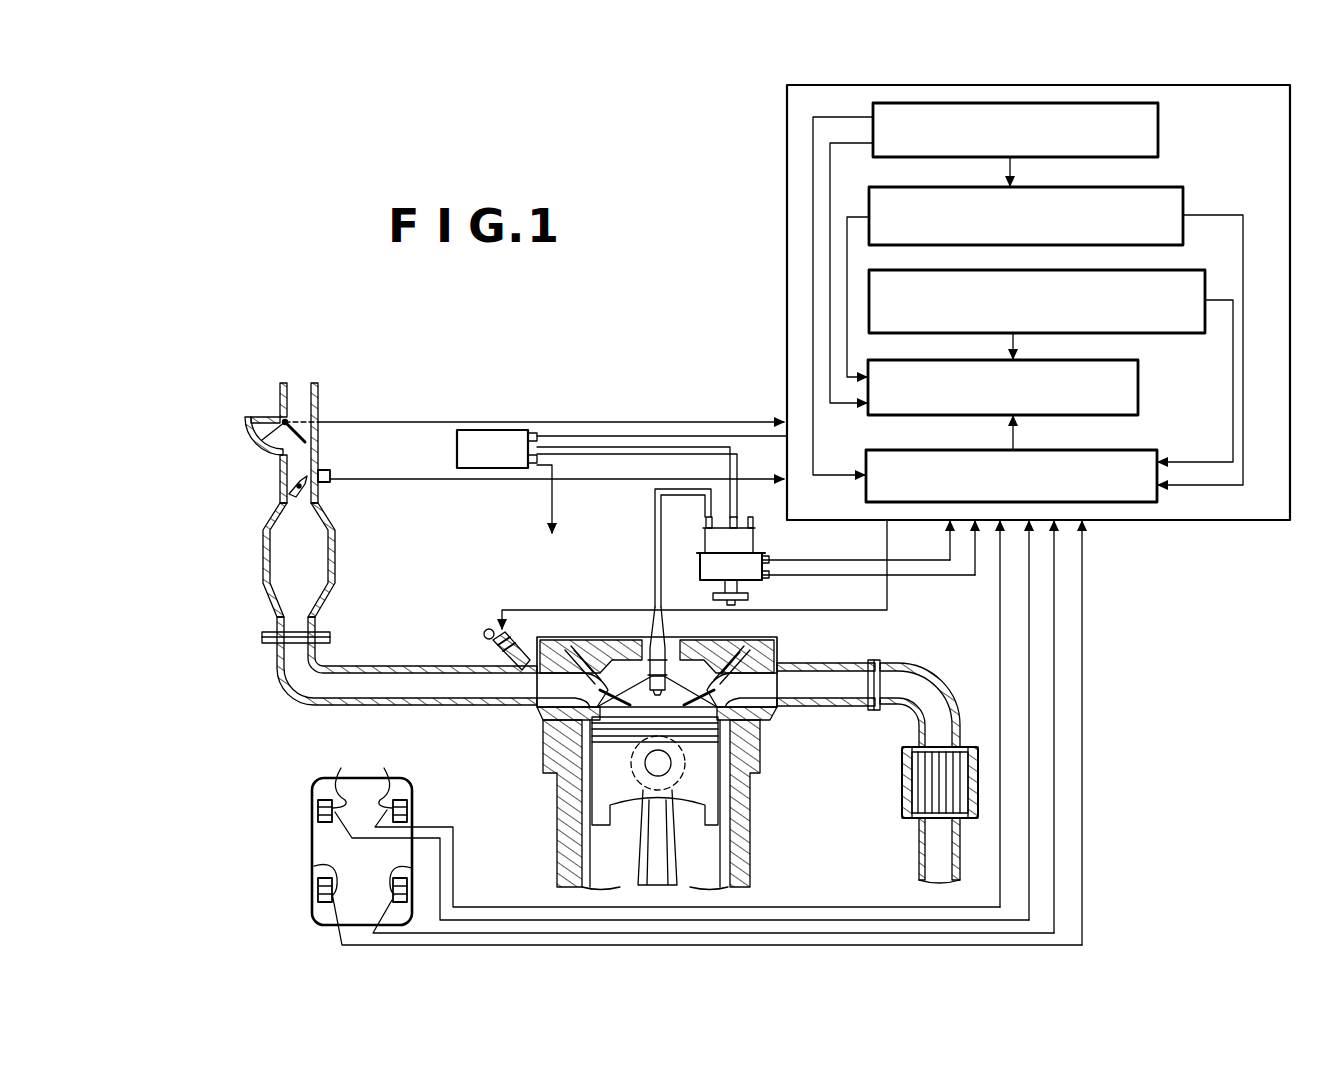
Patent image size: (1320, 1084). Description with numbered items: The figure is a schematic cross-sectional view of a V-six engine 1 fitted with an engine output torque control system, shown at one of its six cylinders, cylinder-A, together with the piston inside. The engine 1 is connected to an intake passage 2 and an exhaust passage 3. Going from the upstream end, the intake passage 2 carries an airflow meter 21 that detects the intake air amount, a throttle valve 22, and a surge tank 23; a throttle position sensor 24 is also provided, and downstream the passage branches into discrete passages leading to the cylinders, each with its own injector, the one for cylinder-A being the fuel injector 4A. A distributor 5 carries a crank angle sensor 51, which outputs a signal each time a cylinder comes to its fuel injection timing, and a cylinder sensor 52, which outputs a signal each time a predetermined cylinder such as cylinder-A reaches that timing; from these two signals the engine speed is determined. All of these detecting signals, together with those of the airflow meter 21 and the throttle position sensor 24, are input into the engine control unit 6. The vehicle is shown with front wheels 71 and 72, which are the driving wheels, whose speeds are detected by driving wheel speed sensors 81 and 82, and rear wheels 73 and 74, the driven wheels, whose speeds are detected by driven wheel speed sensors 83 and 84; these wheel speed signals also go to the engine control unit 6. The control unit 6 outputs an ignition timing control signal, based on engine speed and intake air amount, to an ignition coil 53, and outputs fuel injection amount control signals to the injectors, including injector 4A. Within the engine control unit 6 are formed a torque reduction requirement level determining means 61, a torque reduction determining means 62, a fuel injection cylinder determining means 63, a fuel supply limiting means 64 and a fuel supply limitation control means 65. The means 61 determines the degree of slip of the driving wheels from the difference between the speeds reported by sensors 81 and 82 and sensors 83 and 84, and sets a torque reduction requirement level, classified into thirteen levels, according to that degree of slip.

The V-6 engine 1 is at (641, 763).
The cylinder- A is at (551, 760).
The intake passage 2 is at (265, 511).
The airflow meter 21 is at (283, 420).
The throttle valve 22 is at (292, 487).
The surge tank 23 is at (285, 562).
The throttle position sensor 24 is at (332, 474).
The exhaust passage 3 is at (949, 672).
The fuel injector 4A is at (484, 648).
The distributor 5 is at (836, 547).
The crank angle sensor 51 is at (761, 557).
The cylinder sensor 52 is at (768, 577).
The ignition coil 53 is at (457, 450).
The engine control unit 6 is at (784, 126).
The torque reduction requirement level determining means 61 is at (1160, 138).
The torque reduction determining means 62 is at (1185, 200).
The fuel injection cylinder determining means 63 is at (1240, 287).
The fuel supply limiting means 64 is at (1140, 386).
The fuel supply limitation control means 65 is at (1160, 462).
The front wheel 71 is at (322, 797).
The front wheel 72 is at (405, 797).
The rear wheel 73 is at (316, 898).
The rear wheel 74 is at (402, 882).
The driving wheel speed sensor 81 is at (339, 773).
The driving wheel speed sensor 82 is at (386, 773).
The driven wheel speed sensor 83 is at (316, 866).
The driven wheel speed sensor 84 is at (398, 905).